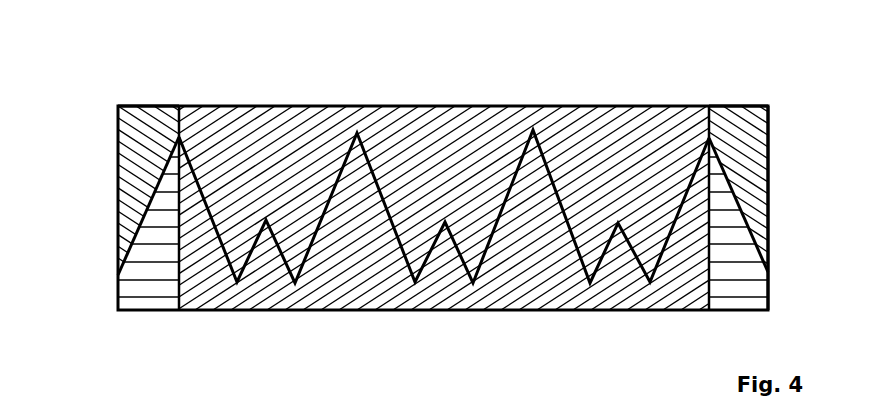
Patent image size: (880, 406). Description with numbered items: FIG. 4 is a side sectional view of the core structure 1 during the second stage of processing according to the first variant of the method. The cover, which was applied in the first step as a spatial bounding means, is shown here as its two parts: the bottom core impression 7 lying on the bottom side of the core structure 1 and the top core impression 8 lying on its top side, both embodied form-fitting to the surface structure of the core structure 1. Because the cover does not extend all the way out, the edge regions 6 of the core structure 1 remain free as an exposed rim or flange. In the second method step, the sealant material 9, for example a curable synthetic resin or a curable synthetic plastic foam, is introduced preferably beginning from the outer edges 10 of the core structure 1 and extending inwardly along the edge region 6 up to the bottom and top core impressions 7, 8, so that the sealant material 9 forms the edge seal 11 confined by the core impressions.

The core structure 1 is at (148, 185).
The edge region 6 is at (150, 70).
The bottom core impression 7 is at (528, 295).
The top core impression 8 is at (465, 118).
The sealant material 9 is at (160, 107).
The outer edge 10 is at (118, 273).
The edge seal 11 is at (799, 226).